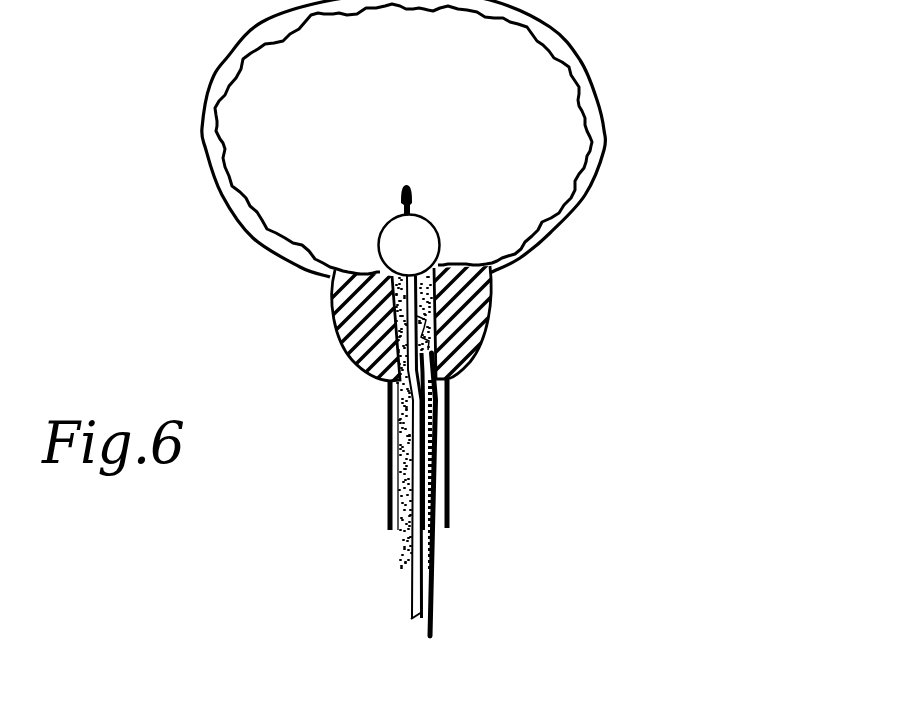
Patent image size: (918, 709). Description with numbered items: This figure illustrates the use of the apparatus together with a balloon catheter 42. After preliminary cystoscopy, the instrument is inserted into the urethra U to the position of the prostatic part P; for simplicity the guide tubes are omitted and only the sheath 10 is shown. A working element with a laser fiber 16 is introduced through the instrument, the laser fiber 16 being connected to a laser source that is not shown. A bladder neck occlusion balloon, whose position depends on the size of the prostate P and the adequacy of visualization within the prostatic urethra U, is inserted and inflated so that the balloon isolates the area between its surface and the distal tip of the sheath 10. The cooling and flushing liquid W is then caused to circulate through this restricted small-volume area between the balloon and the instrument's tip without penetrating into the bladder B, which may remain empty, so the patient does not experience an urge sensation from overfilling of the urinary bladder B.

The bladder B is at (601, 152).
The prostatic part P is at (480, 332).
The cooling and flushing liquid W is at (393, 330).
The urethra U is at (448, 441).
The sheath 10 is at (441, 538).
The balloon catheter 42 is at (412, 543).
The laser fiber 16 is at (436, 591).